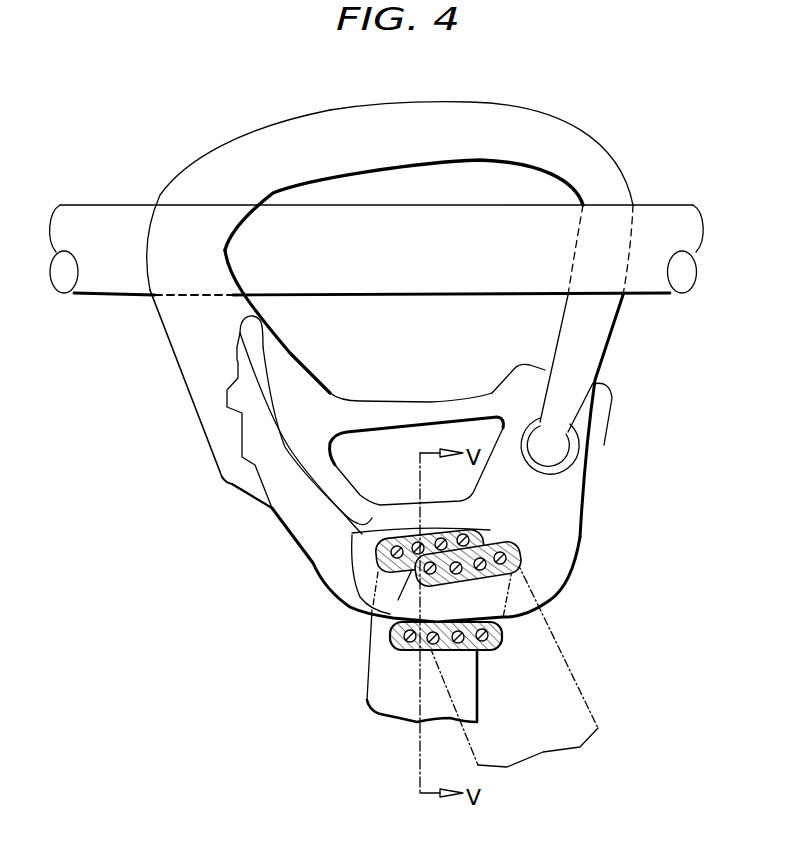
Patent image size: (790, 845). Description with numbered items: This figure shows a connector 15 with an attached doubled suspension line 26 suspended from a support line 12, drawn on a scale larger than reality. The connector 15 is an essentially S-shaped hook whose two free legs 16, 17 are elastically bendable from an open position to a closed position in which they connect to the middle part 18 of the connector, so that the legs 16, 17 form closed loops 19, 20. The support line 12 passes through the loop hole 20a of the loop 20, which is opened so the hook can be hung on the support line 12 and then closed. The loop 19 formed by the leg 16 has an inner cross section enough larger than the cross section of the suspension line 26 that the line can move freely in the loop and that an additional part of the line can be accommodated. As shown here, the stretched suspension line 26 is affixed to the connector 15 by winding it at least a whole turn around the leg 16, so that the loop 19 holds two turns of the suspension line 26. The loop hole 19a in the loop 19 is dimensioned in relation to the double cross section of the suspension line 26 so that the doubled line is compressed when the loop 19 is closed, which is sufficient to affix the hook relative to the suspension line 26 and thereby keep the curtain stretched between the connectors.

The support line 12 is at (69, 220).
The connector 15 is at (610, 108).
The leg 16 is at (325, 558).
The leg 17 is at (600, 333).
The middle part 18 is at (510, 407).
The loop 19 is at (385, 600).
The loop hole 19a is at (487, 530).
The loop 20 is at (290, 368).
The loop hole 20a is at (438, 188).
The suspension line 26 is at (487, 538).